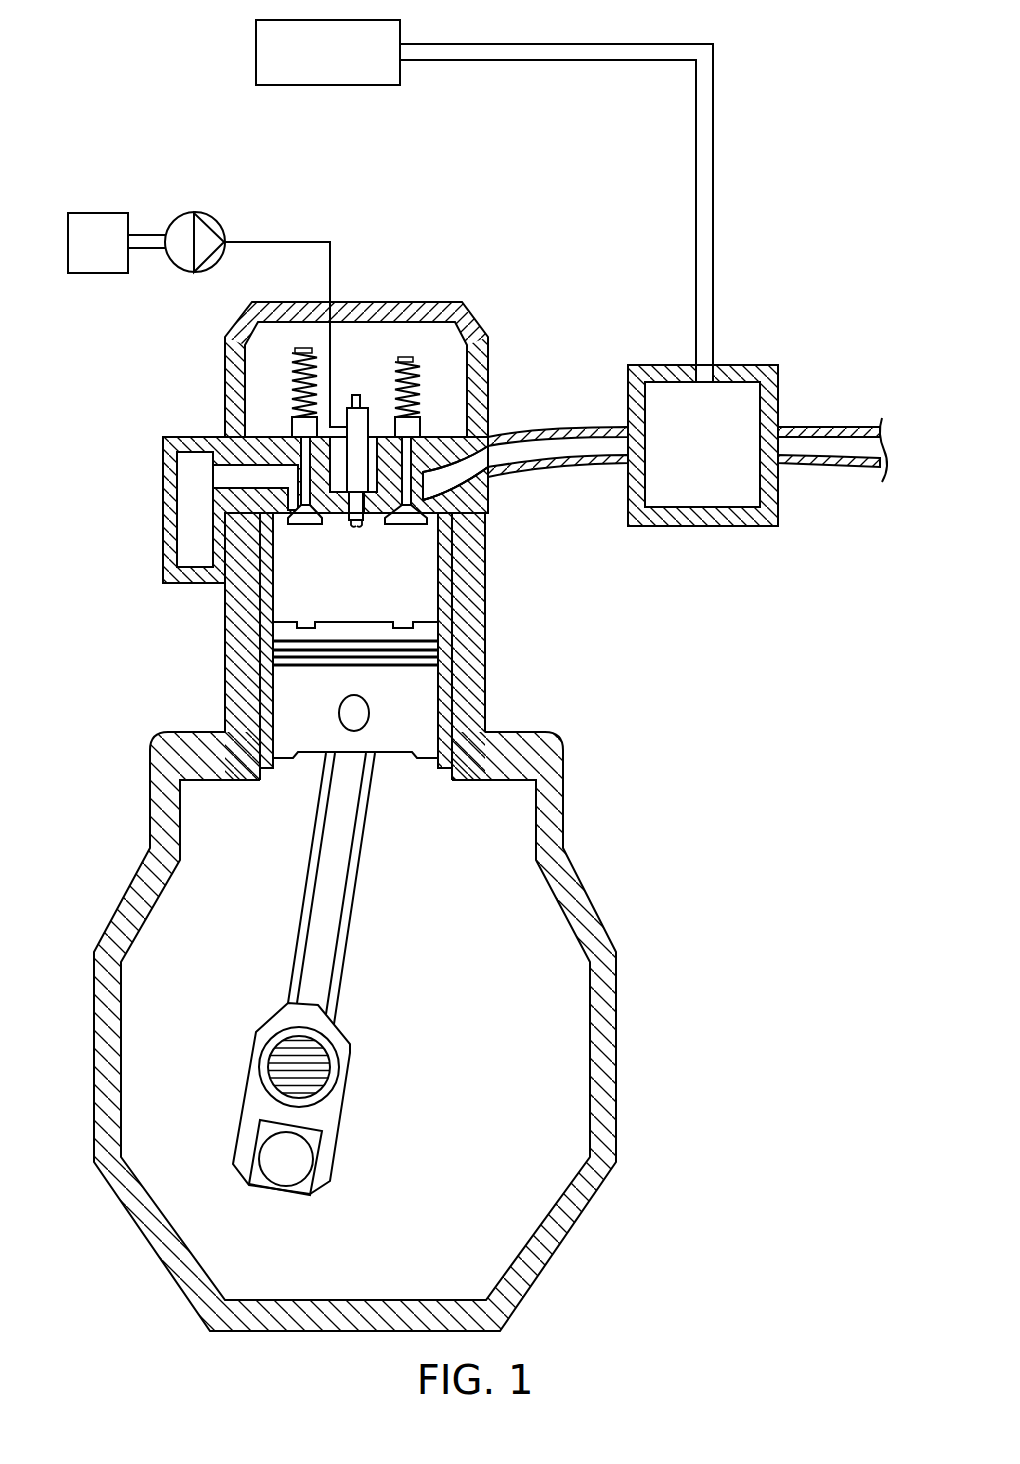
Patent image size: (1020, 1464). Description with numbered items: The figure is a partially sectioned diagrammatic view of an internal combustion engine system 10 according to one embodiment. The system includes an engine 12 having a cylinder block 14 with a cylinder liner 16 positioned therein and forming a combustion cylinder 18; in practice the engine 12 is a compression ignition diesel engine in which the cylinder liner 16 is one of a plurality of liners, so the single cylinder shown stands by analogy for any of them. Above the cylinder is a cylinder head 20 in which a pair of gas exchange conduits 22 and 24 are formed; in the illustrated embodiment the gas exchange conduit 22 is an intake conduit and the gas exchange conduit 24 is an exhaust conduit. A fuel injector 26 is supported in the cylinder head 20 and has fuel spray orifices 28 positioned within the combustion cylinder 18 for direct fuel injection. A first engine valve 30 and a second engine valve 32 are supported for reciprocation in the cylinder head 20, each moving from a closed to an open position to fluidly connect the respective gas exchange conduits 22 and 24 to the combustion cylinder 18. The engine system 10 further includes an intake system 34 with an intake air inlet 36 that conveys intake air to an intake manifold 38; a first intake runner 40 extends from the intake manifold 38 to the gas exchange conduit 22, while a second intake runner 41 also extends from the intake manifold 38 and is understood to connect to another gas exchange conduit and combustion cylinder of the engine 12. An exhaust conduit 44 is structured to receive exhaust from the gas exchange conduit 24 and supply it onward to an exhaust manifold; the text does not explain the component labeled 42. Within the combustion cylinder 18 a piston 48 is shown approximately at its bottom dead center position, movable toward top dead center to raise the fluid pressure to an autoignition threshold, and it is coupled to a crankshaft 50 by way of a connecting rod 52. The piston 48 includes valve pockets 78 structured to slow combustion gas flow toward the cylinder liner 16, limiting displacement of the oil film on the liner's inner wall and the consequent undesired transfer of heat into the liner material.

The internal combustion engine system 10 is at (70, 130).
The engine 12 is at (557, 729).
The cylinder block 14 is at (150, 740).
The cylinder liner 16 is at (262, 690).
The combustion cylinder 18 is at (286, 612).
The cylinder head 20 is at (479, 497).
The gas exchange conduit 22 is at (479, 445).
The gas exchange conduit 24 is at (228, 472).
The fuel injector 26 is at (368, 425).
The fuel spray orifices 28 is at (353, 528).
The first engine valve 30 is at (407, 526).
The second engine valve 32 is at (303, 526).
The intake system 34 is at (750, 310).
The intake air inlet 36 is at (327, 86).
The intake manifold 38 is at (650, 365).
The first intake runner 40 is at (595, 427).
The second intake runner 41 is at (816, 427).
The fuel system 42 is at (93, 274).
The exhaust conduit 44 is at (164, 551).
The piston 48 is at (426, 676).
The crankshaft 50 is at (329, 1067).
The connecting rod 52 is at (344, 904).
The valve pockets 78 is at (409, 611).